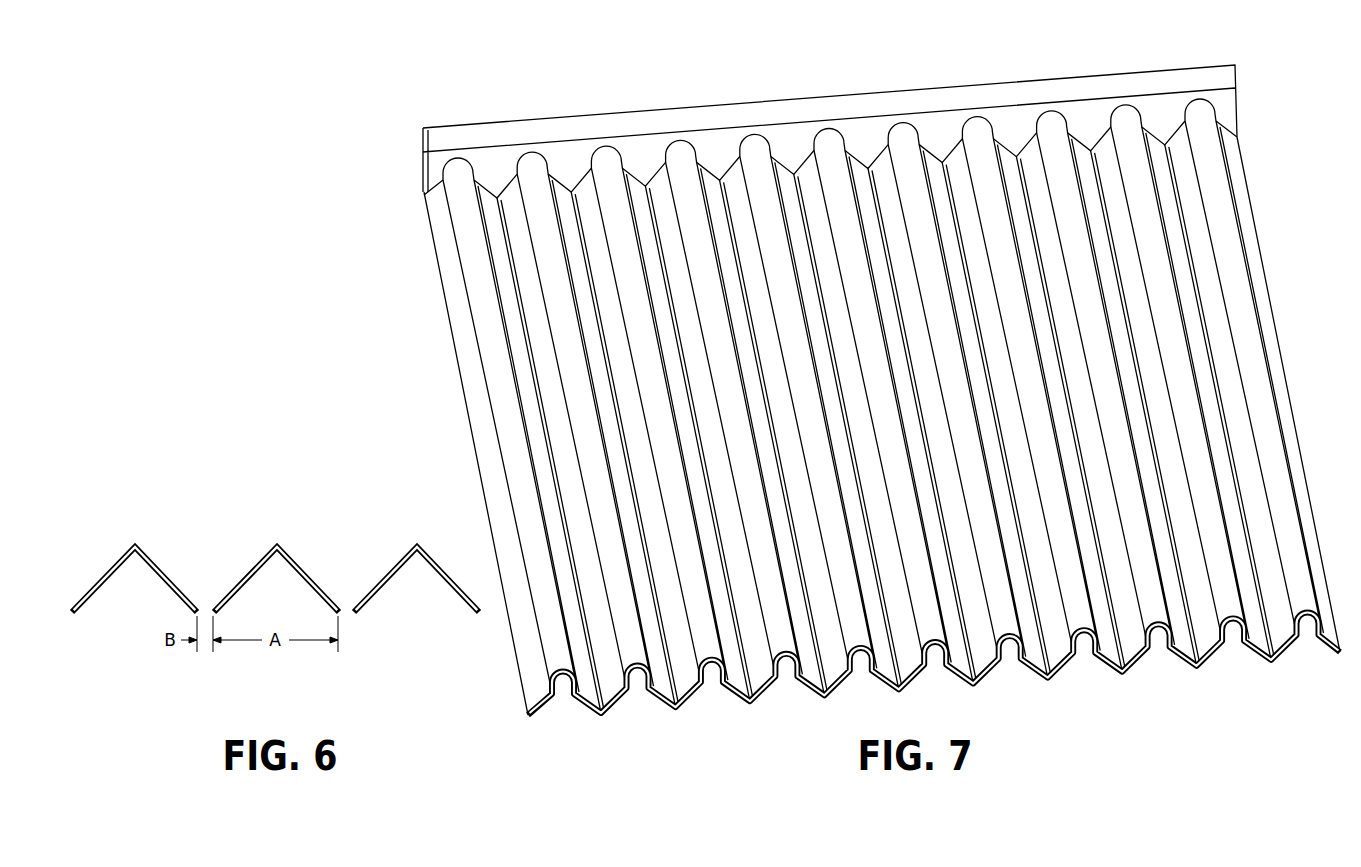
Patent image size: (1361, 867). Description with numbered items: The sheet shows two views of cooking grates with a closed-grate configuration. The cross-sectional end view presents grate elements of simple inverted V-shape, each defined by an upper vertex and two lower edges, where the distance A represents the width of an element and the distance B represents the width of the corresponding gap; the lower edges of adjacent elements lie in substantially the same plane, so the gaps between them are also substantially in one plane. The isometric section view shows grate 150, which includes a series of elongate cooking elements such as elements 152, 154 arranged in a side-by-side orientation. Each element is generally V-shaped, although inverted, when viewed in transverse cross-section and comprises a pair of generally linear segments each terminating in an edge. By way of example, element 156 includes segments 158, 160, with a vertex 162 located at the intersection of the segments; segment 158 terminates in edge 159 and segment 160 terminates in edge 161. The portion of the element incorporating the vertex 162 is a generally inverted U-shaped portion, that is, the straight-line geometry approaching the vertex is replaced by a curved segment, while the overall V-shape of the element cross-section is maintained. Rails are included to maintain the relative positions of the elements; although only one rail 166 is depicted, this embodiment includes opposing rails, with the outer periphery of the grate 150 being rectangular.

The grate 150 is at (509, 99).
The element 152 is at (683, 148).
The element 154 is at (757, 143).
The element 156 is at (908, 131).
The rail 166 is at (792, 137).
The segment 158 is at (1125, 623).
The edge 159 is at (1104, 631).
The segment 160 is at (1196, 631).
The edge 161 is at (1180, 628).
The vertex 162 is at (1157, 600).